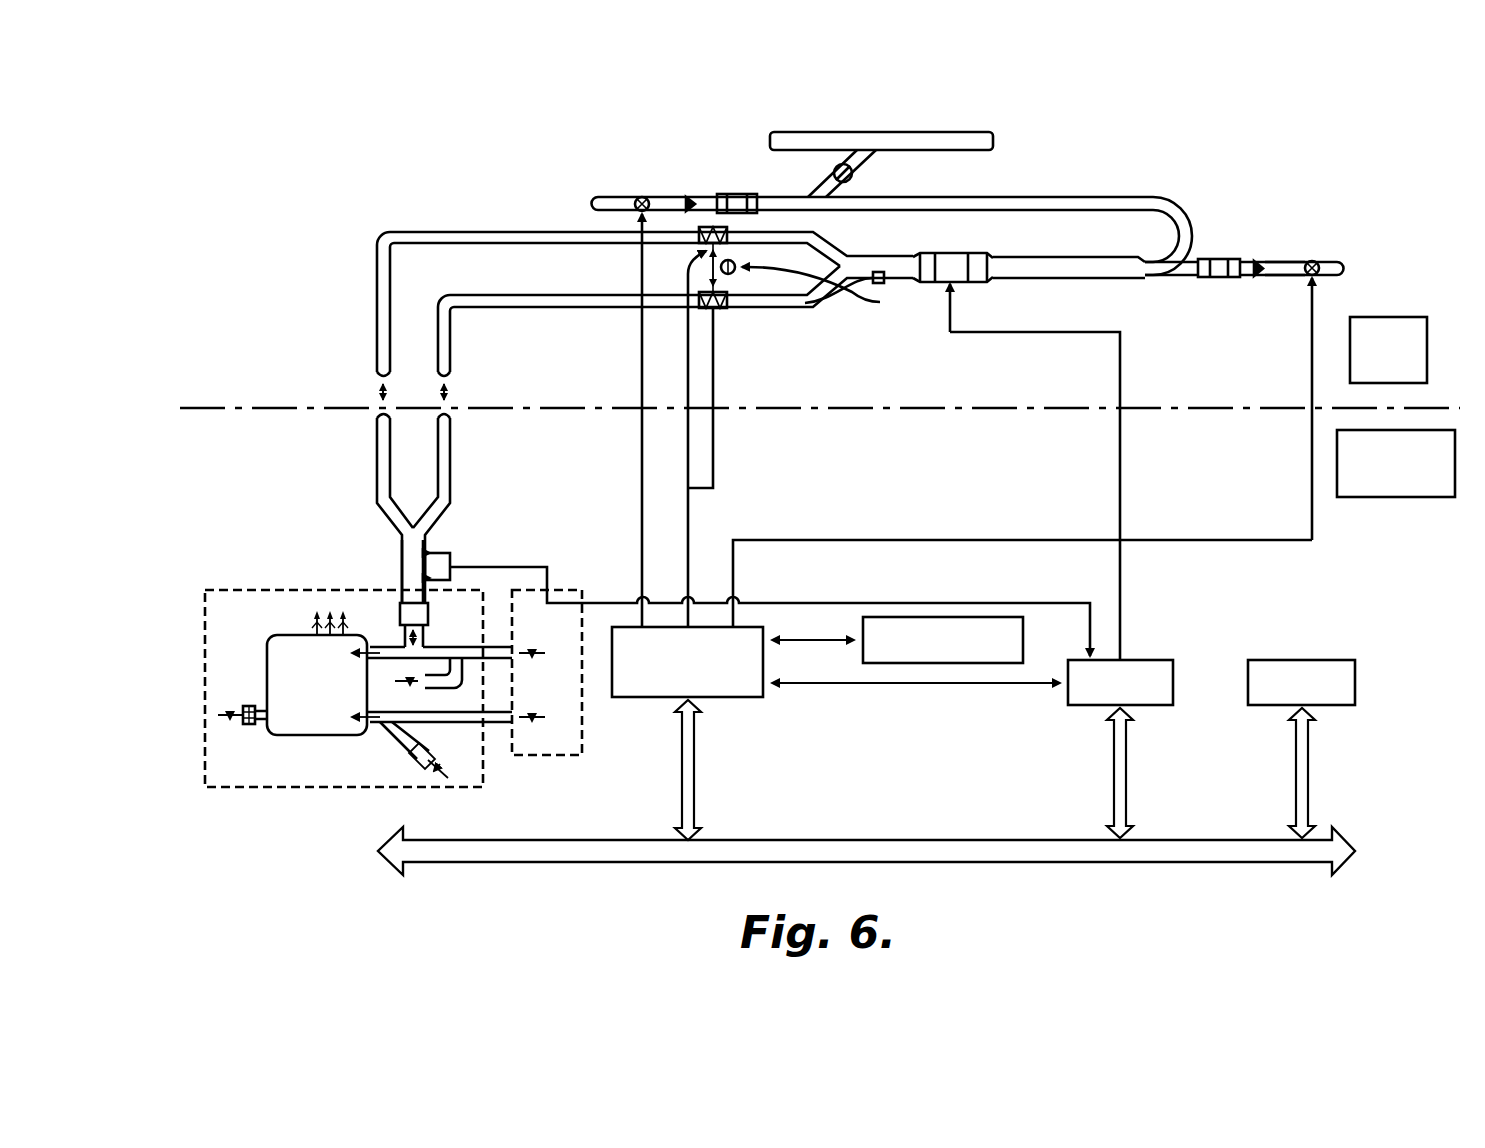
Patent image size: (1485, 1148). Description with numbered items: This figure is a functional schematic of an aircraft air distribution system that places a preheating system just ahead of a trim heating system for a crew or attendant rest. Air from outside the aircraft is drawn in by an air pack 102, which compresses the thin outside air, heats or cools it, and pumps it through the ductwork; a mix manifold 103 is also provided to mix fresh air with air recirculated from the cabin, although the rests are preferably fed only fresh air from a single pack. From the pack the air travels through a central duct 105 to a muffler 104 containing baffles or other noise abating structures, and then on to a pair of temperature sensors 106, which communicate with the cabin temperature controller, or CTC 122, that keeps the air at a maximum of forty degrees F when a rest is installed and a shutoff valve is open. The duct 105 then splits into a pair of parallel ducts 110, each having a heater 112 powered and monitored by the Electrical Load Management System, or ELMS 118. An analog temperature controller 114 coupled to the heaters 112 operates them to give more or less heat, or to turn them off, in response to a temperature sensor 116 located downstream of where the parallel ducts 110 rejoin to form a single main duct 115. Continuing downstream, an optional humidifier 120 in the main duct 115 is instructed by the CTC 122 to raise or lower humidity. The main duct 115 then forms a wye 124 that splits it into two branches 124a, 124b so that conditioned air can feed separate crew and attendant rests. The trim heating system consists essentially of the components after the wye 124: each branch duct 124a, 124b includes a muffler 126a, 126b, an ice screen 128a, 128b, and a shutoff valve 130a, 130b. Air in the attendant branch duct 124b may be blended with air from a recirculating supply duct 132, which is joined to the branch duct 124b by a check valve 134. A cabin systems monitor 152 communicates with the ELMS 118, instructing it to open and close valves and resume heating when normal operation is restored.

The air pack 102 is at (584, 735).
The mix manifold 103 is at (206, 610).
The muffler 104 is at (398, 612).
The central duct 105 is at (400, 574).
The temperature sensors 106 is at (432, 553).
The parallel ducts 110 is at (552, 295).
The heater 112 is at (703, 252).
The analog temperature controller 114 is at (731, 275).
The main duct 115 is at (1060, 280).
The temperature sensor 116 is at (880, 283).
The Electrical Load Management System (ELMS) 118 is at (737, 698).
The humidifier 120 is at (963, 253).
The cabin temperature controller (CTC) 122 is at (1153, 660).
The wye 124 is at (1198, 262).
The branch duct 124a is at (1283, 262).
The attendant branch duct 124b is at (1128, 197).
The muffler 126a is at (1205, 278).
The muffler 126b is at (745, 194).
The ice screen 128a is at (1258, 278).
The ice screen 128b is at (691, 193).
The shutoff valve 130a is at (1318, 262).
The shutoff valve 130b is at (642, 196).
The recirculating supply duct 132 is at (915, 132).
The check valve 134 is at (853, 177).
The cabin systems monitor 152 is at (863, 654).